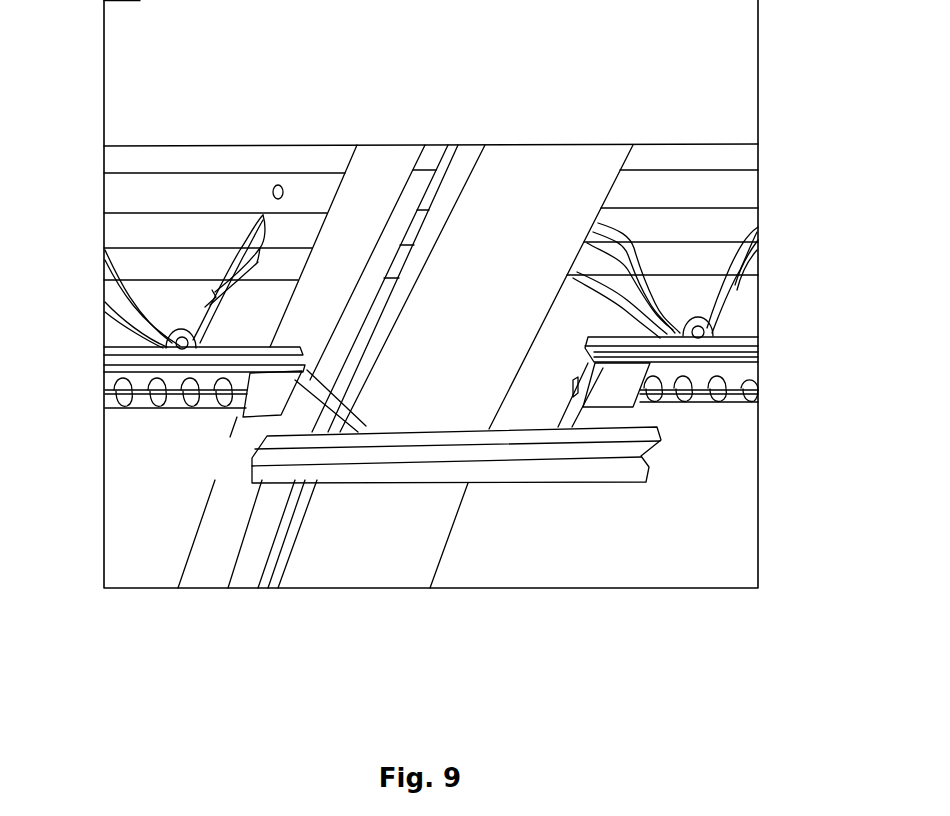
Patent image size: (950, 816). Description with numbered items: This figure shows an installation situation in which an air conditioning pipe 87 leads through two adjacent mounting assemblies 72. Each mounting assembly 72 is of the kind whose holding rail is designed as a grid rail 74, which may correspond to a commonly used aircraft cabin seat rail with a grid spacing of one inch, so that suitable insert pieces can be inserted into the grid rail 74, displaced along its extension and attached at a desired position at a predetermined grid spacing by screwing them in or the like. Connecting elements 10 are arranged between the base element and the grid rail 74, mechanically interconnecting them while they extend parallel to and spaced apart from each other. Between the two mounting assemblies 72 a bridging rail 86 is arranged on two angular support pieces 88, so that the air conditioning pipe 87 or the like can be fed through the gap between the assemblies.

The mounting assembly 72 is at (78, 167).
The connecting elements 10 is at (115, 322).
The grid rail 74 is at (123, 395).
The angular support pieces 88 is at (255, 402).
The bridging rail 86 is at (370, 465).
The air conditioning pipe 87 is at (373, 550).